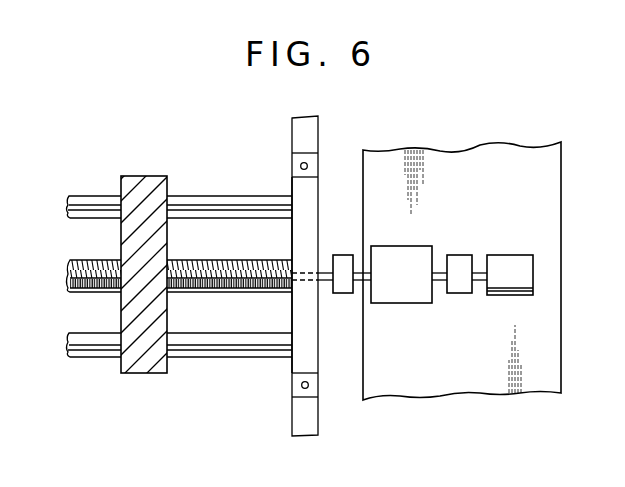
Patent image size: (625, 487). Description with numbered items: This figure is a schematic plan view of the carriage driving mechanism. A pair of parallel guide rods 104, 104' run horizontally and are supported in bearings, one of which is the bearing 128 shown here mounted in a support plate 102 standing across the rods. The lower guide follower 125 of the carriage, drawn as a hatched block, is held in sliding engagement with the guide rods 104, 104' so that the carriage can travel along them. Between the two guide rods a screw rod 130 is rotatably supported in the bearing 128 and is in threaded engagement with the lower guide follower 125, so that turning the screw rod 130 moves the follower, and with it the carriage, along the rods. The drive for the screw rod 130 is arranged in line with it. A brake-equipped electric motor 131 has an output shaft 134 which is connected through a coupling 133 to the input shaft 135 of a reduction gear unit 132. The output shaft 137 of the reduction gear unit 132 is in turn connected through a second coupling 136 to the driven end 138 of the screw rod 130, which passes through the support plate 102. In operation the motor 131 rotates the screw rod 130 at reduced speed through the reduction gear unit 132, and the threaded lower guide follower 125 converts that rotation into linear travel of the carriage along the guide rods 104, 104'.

The support plate 102 is at (318, 418).
The guide rod 104 is at (180, 364).
The guide rod 104' is at (180, 183).
The lower guide follower 125 is at (138, 370).
The bearing 128 is at (300, 363).
The screw rod 130 is at (101, 294).
The brake-equipped electric motor 131 is at (511, 256).
The reduction gear unit 132 is at (397, 251).
The coupling 133 is at (457, 254).
The output shaft 134 is at (477, 281).
The input shaft 135 is at (436, 281).
The coupling 136 is at (338, 255).
The output shaft 137 is at (362, 282).
The driven end 138 is at (328, 292).